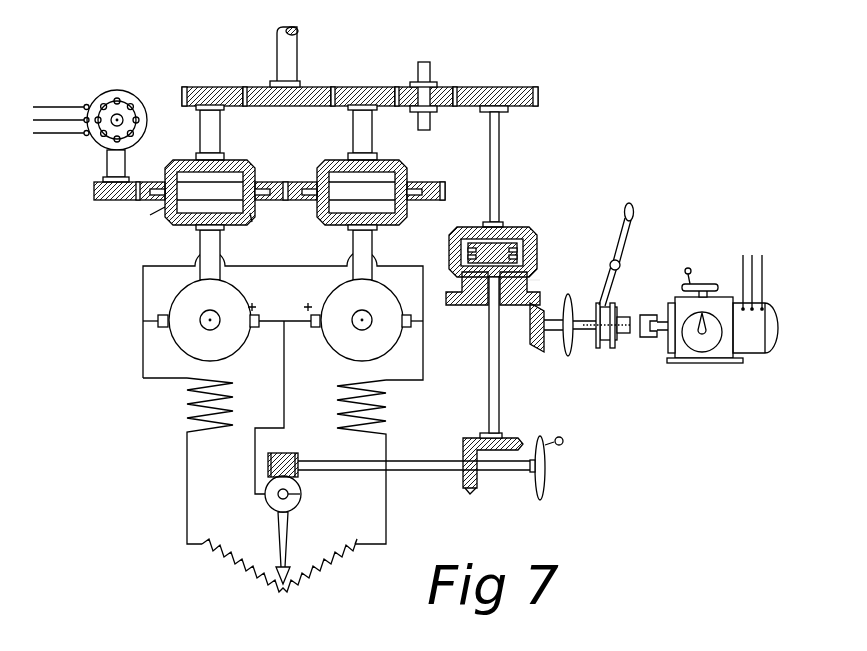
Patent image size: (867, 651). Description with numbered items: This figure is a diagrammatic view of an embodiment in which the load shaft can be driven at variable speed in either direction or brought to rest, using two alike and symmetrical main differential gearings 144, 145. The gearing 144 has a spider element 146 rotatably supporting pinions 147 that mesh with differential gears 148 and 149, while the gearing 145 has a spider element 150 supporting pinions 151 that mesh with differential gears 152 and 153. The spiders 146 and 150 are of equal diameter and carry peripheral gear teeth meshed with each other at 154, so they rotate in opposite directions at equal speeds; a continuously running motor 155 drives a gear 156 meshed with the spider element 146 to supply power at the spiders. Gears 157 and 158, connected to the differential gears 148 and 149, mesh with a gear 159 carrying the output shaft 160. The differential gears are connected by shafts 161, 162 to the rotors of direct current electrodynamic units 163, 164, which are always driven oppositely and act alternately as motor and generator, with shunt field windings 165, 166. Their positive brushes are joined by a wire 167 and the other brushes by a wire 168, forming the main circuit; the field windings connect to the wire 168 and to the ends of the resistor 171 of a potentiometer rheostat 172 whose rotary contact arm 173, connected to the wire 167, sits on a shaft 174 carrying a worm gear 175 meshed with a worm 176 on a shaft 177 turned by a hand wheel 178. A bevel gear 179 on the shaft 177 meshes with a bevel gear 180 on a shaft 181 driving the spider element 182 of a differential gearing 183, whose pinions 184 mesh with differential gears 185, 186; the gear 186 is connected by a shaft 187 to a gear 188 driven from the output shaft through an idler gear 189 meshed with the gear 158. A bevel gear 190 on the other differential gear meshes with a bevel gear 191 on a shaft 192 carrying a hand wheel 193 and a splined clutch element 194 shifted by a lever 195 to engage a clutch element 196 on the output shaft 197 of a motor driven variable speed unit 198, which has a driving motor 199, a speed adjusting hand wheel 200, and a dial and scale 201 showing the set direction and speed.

The differential gearing 144 is at (222, 155).
The differential gearing 145 is at (369, 165).
The spider element 146 is at (240, 182).
The pinion 147 is at (204, 221).
The differential gear 148 is at (190, 162).
The differential gear 149 is at (186, 225).
The spider element 150 is at (268, 182).
The pinion 151 is at (410, 183).
The differential gear 152 is at (390, 164).
The differential gear 153 is at (392, 226).
The meshed gear teeth 154 is at (245, 188).
The motor 155 is at (118, 82).
The gear 156 is at (108, 200).
The gear 157 is at (206, 88).
The gear 158 is at (362, 88).
The gear 159 is at (322, 82).
The output shaft 160 is at (298, 40).
The shaft 161 is at (216, 248).
The shaft 162 is at (356, 248).
The electrodynamic unit 163 is at (243, 300).
The electrodynamic unit 164 is at (330, 293).
The field winding 165 is at (228, 392).
The field winding 166 is at (340, 392).
The wire 167 is at (288, 320).
The wire 168 is at (280, 266).
The resistor 171 is at (245, 592).
The potentiometer rheostat 172 is at (279, 545).
The rotary contact arm 173 is at (278, 540).
The shaft 174 is at (300, 495).
The worm gear 175 is at (297, 488).
The worm 176 is at (284, 455).
The shaft 177 is at (347, 461).
The hand wheel 178 is at (546, 480).
The bevel gear 179 is at (468, 487).
The bevel gear 180 is at (520, 438).
The shaft 181 is at (499, 400).
The spider element 182 is at (512, 240).
The differential gearing 183 is at (495, 282).
The pinion 184 is at (536, 248).
The differential gear 185 is at (532, 290).
The differential gear 186 is at (472, 228).
The shaft 187 is at (499, 180).
The gear 188 is at (518, 82).
The idler gear 189 is at (440, 90).
The bevel gear 190 is at (476, 287).
The bevel gear 191 is at (533, 300).
The shaft 192 is at (553, 340).
The hand wheel 193 is at (567, 348).
The clutch element 194 is at (626, 312).
The lever 195 is at (621, 268).
The clutch element 196 is at (650, 338).
The output shaft 197 is at (660, 316).
The motor driven unit 198 is at (705, 341).
The motor 199 is at (760, 355).
The hand wheel 200 is at (712, 283).
The dial and scale 201 is at (702, 332).